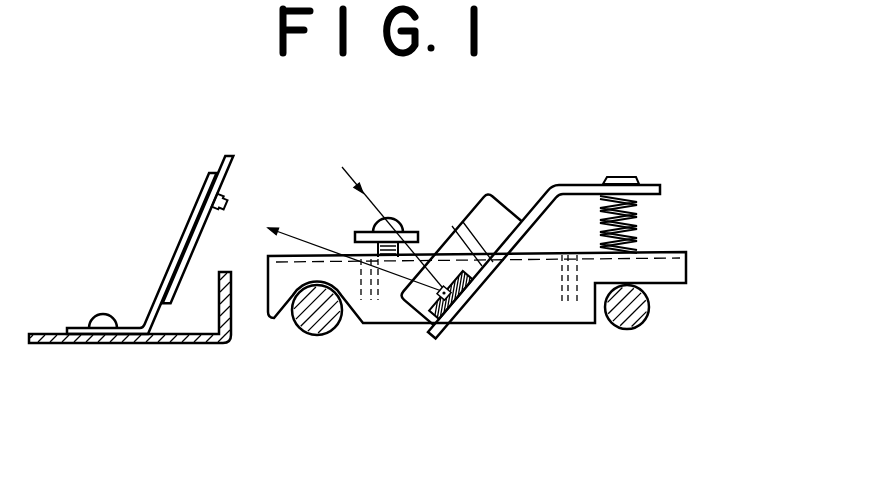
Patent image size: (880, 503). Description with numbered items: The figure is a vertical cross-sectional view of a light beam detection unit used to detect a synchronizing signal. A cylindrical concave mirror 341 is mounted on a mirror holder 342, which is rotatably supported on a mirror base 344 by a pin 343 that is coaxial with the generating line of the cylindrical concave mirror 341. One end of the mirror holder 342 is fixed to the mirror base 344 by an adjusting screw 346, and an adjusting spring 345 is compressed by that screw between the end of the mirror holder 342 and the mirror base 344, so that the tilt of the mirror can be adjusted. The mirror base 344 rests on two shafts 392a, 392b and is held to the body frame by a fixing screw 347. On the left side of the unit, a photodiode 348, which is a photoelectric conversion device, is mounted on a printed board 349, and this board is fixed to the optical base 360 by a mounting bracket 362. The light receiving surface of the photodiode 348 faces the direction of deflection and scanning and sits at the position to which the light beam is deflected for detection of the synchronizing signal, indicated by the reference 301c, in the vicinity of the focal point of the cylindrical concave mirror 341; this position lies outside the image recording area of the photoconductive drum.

The deflected light beam position 301c is at (343, 167).
The cylindrical concave mirror 341 is at (470, 280).
The mirror holder 342 is at (543, 196).
The pin 343 is at (445, 290).
The mirror base 344 is at (687, 260).
The adjusting spring 345 is at (638, 207).
The adjusting screw 346 is at (620, 176).
The fixing screw 347 is at (397, 222).
The photodiode 348 is at (228, 206).
The printed board 349 is at (232, 162).
The optical base 360 is at (97, 345).
The mounting bracket 362 is at (180, 232).
The shaft 392a is at (647, 327).
The shaft 392b is at (333, 336).